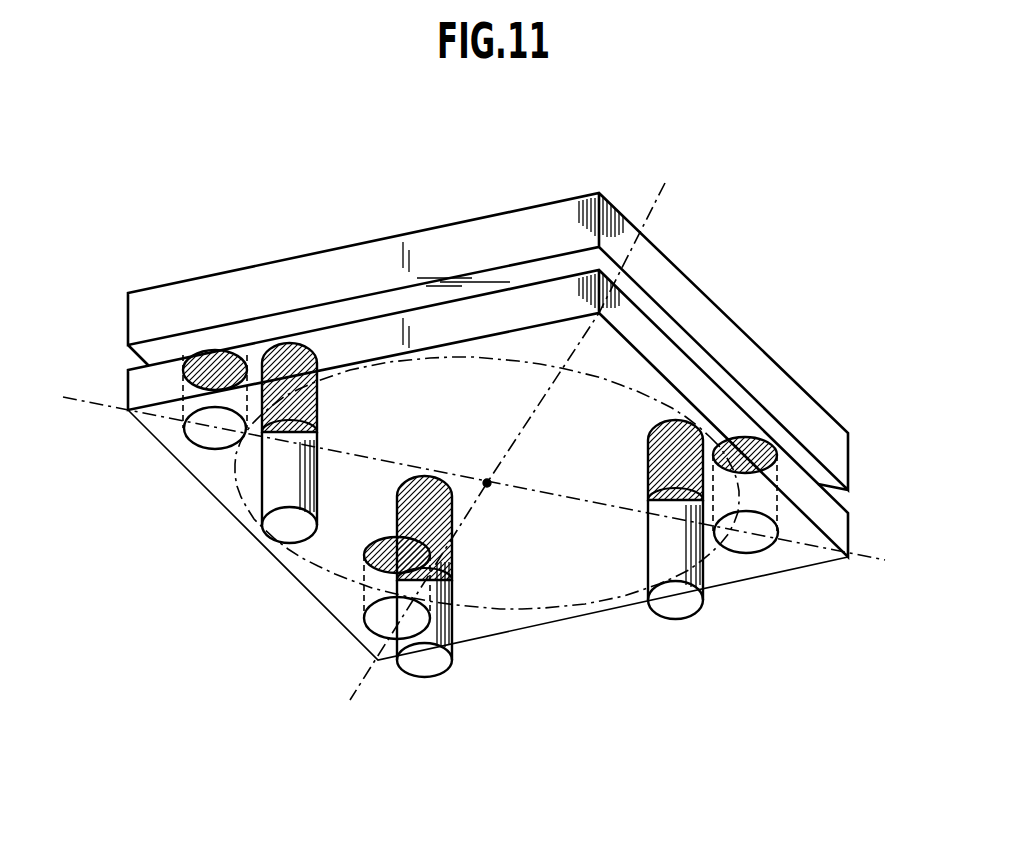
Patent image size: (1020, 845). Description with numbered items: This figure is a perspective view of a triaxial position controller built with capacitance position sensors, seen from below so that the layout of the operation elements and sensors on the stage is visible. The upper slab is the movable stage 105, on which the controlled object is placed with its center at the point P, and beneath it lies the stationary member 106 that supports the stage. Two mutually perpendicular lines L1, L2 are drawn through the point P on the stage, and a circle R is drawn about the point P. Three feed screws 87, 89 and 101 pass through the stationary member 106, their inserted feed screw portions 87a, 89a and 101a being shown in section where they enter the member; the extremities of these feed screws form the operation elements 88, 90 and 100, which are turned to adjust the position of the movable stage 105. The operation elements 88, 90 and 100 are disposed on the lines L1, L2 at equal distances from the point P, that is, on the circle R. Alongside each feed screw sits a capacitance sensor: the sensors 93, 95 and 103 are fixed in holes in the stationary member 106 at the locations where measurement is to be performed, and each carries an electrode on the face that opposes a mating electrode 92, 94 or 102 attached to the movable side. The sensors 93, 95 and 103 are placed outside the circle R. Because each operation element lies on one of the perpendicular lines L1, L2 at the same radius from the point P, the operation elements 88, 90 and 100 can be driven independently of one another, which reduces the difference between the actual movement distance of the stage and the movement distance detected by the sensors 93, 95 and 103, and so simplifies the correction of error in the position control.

The feed screw 87 is at (290, 343).
The feed screw portion 87a is at (305, 350).
The operation element 88 is at (273, 528).
The feed screw 89 is at (662, 420).
The feed screw portion 89a is at (652, 448).
The operation element 90 is at (675, 606).
The electrode 92 is at (216, 348).
The sensor 93 is at (200, 444).
The electrode 94 is at (780, 442).
The sensor 95 is at (745, 548).
The operation element 100 is at (422, 664).
The feed screw 101 is at (420, 476).
The feed screw portion 101a is at (453, 530).
The electrode 102 is at (367, 538).
The sensor 103 is at (378, 623).
The movable stage 105 is at (743, 367).
The stationary member 106 is at (657, 347).
The line L1 is at (517, 423).
The line L2 is at (82, 405).
The center of the movable stage P is at (487, 480).
The circle R is at (529, 602).